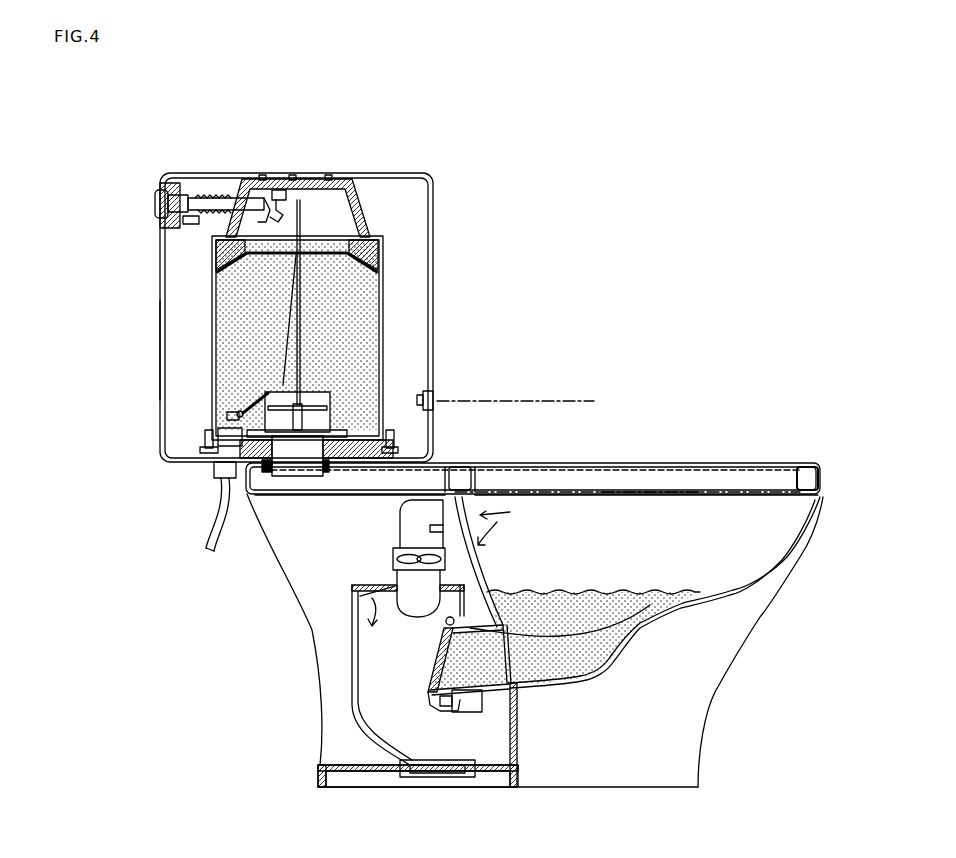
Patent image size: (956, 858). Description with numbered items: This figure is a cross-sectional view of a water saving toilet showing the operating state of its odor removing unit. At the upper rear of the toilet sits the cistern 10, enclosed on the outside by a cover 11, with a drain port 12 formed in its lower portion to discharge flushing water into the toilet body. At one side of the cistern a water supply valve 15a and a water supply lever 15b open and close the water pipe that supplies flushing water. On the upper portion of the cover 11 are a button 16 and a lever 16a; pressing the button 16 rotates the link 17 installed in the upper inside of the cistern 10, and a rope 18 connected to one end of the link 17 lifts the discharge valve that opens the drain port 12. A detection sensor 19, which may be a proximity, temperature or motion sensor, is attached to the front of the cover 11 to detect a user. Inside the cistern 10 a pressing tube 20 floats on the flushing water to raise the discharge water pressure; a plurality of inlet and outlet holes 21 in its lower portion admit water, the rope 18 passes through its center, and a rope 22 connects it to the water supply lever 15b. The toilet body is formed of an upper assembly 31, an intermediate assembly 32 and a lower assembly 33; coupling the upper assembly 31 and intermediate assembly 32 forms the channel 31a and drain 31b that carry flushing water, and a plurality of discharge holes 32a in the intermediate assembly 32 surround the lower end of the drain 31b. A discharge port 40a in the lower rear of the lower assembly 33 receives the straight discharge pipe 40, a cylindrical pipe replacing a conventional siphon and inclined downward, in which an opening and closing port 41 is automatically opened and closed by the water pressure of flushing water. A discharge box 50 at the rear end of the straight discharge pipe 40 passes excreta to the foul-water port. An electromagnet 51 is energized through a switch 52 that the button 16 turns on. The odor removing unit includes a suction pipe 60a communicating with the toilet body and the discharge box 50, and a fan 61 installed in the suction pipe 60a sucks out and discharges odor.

The cistern 10 is at (385, 310).
The cover 11 is at (159, 340).
The drain port 12 is at (302, 468).
The water supply valve 15a is at (202, 430).
The water supply lever 15b is at (243, 387).
The button 16 is at (158, 204).
The lever 16a is at (216, 194).
The link 17 is at (292, 190).
The rope 18 is at (305, 354).
The detection sensor 19 is at (436, 400).
The pressing tube 20 is at (214, 268).
The inlet and outlet holes 21 is at (302, 352).
The rope 22 is at (292, 328).
The upper assembly 31 is at (635, 464).
The channel 31a is at (232, 508).
The drain 31b is at (808, 468).
The intermediate assembly 32 is at (330, 497).
The discharge holes 32a is at (652, 497).
The lower assembly 33 is at (748, 580).
The straight discharge pipe 40 is at (480, 625).
The discharge port 40a is at (517, 655).
The opening and closing port 41 is at (438, 653).
The discharge box 50 is at (352, 708).
The electromagnet 51 is at (482, 702).
The switch 52 is at (182, 224).
The suction pipe 60a is at (460, 465).
The fan 61 is at (392, 558).